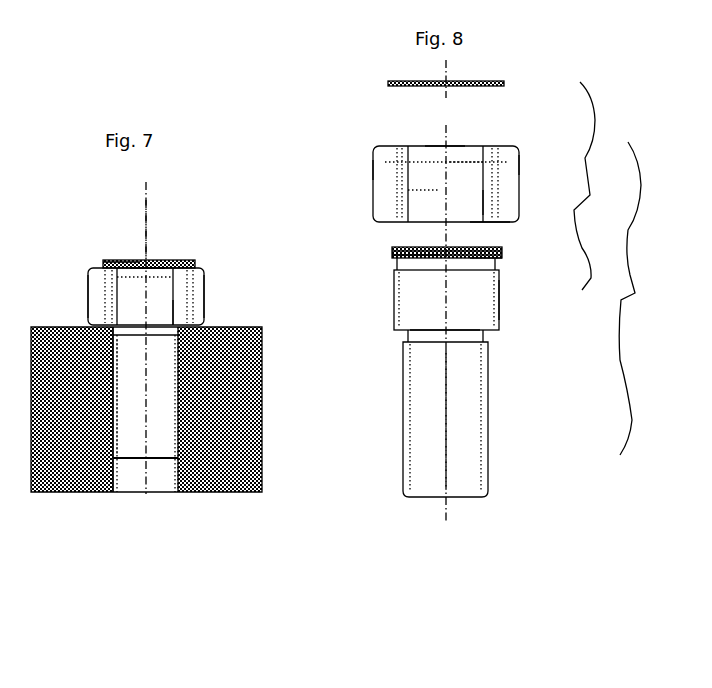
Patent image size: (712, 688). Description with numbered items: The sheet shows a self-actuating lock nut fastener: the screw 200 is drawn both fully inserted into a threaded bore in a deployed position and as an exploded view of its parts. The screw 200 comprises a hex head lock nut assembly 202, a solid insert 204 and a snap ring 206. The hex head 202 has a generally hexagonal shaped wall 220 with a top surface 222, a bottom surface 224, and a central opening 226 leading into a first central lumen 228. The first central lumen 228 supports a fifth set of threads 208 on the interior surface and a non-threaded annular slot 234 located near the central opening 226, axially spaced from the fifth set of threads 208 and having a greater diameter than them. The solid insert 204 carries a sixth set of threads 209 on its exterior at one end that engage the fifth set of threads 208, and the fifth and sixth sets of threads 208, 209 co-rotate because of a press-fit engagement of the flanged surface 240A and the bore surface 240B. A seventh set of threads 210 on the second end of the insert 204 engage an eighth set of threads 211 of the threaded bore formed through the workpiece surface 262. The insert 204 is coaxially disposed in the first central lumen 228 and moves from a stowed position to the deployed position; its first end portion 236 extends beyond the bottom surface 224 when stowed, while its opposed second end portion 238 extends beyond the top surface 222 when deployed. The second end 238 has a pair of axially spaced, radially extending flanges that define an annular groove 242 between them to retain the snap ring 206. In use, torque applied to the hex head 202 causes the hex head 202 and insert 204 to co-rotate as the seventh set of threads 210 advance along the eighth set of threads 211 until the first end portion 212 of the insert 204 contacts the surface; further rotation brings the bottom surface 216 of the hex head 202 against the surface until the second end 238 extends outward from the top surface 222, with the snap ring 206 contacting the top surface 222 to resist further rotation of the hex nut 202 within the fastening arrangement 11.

In FIG. 8, the fastening assembly 11 is at (597, 186).
In FIG. 7, the screw 200 is at (143, 220).
In FIG. 8, the screw 200 is at (650, 298).
In FIG. 7, the hex head lock nut assembly 202 is at (195, 290).
In FIG. 8, the hex head lock nut assembly 202 is at (387, 173).
In FIG. 7, the solid insert 204 is at (163, 420).
In FIG. 8, the solid insert 204 is at (460, 440).
In FIG. 7, the snap ring 206 is at (196, 268).
In FIG. 8, the snap ring 206 is at (480, 78).
In FIG. 7, the fifth set of threads 208 is at (183, 317).
In FIG. 8, the fifth set of threads 208 is at (497, 197).
In FIG. 8, the sixth set of threads 209 is at (497, 300).
In FIG. 7, the seventh set of threads 210 is at (117, 423).
In FIG. 8, the seventh set of threads 210 is at (483, 407).
In FIG. 7, the eighth set of threads 211 is at (172, 473).
In FIG. 8, the first end portion 212 is at (428, 335).
In FIG. 8, the bottom surface 216 is at (495, 336).
In FIG. 8, the hexagonal shaped wall 220 is at (427, 190).
In FIG. 7, the top surface 222 is at (97, 265).
In FIG. 8, the top surface 222 is at (490, 152).
In FIG. 8, the bottom surface 224 is at (495, 222).
In FIG. 7, the central opening 226 is at (147, 262).
In FIG. 8, the central opening 226 is at (445, 147).
In FIG. 8, the first central lumen 228 is at (462, 182).
In FIG. 7, the non-threaded annular slot 234 is at (197, 288).
In FIG. 8, the non-threaded annular slot 234 is at (495, 263).
In FIG. 8, the first end portion 236 is at (425, 290).
In FIG. 7, the second end portion 238 is at (128, 260).
In FIG. 8, the second end portion 238 is at (408, 243).
In FIG. 8, the flanged surface 240A is at (395, 255).
In FIG. 8, the bore surface 240B is at (387, 170).
In FIG. 8, the annular groove 242 is at (503, 252).
In FIG. 7, the workpiece block 262 is at (60, 327).